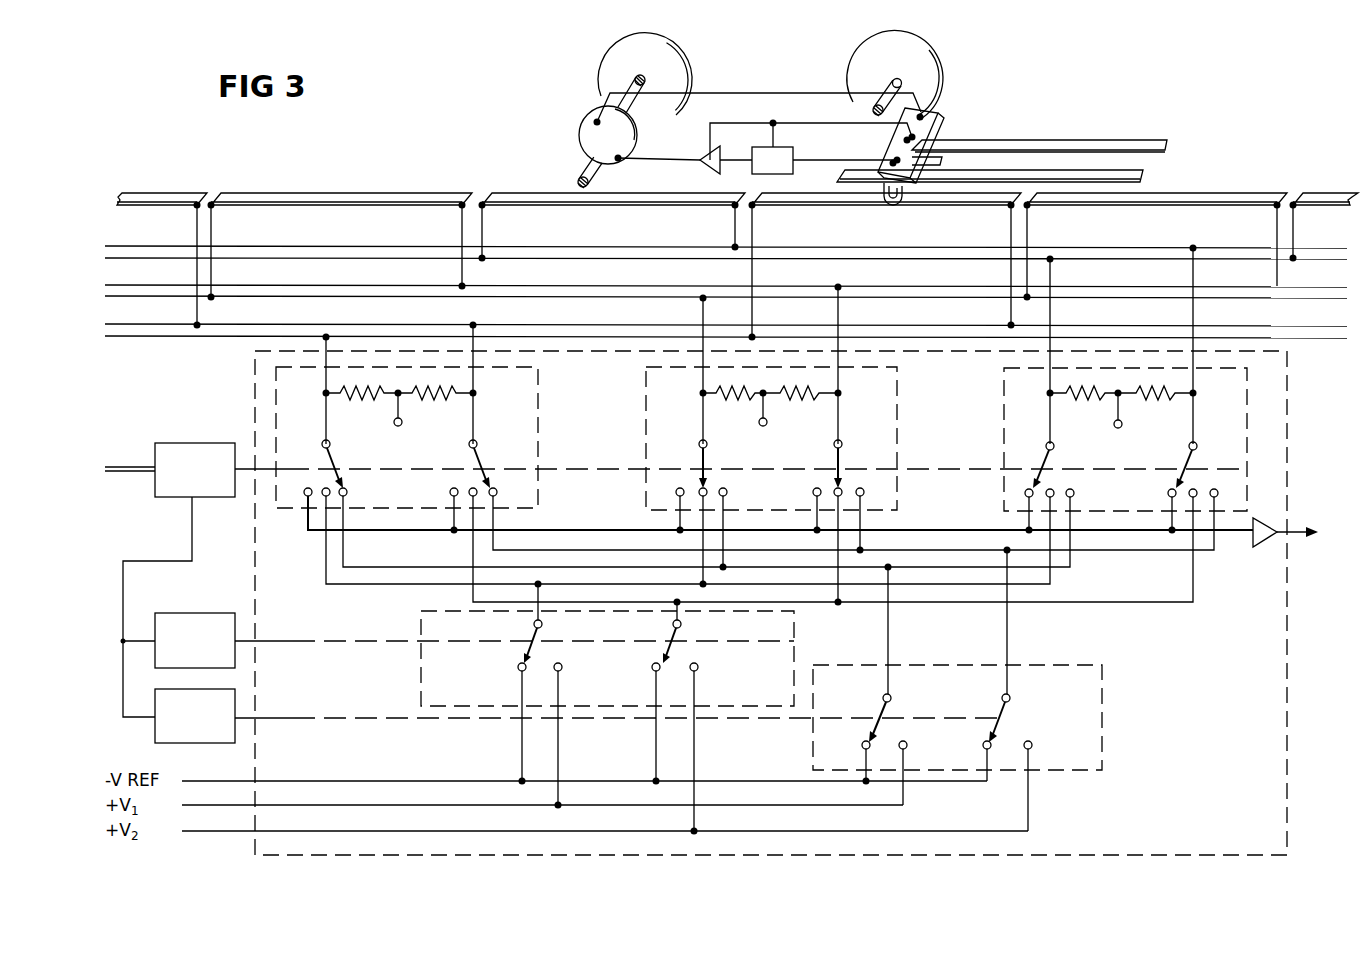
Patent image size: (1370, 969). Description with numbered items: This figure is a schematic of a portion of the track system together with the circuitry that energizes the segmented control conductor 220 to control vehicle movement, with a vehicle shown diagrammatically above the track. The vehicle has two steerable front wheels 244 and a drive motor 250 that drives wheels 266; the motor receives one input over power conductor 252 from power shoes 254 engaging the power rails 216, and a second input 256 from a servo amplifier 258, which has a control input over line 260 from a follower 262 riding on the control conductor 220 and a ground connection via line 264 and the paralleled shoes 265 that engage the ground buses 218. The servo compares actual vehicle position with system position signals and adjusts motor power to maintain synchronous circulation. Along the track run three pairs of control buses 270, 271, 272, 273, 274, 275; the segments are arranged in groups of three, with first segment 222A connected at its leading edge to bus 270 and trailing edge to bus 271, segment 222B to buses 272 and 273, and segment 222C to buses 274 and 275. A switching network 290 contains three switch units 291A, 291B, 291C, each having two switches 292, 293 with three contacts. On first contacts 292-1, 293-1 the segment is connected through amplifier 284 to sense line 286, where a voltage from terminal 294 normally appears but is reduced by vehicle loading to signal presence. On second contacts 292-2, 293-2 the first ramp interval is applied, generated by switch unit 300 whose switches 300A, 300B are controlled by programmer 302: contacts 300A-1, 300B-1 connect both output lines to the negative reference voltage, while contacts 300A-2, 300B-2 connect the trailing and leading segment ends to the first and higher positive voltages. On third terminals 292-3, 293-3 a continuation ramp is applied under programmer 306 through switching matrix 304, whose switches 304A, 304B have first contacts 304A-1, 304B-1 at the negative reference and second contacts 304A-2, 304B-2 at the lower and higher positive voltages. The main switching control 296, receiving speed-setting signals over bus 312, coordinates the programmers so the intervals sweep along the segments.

The power rails 216 is at (1114, 140).
The ground buses 218 is at (1143, 176).
The segmented control conductor 220 is at (1244, 186).
The first segment 222A is at (622, 206).
The segment 222B is at (292, 206).
The segment 222C is at (147, 206).
The steerable front wheels 244 is at (936, 54).
The drive motor 250 is at (584, 121).
The power conductor 252 is at (773, 93).
The power shoes 254 is at (942, 129).
The second input 256 is at (660, 166).
The servo amplifier 258 is at (706, 154).
The line 260 is at (847, 158).
The follower 262 is at (906, 197).
The line 264 is at (822, 124).
The paralleled shoes 265 is at (924, 161).
The wheels 266 is at (598, 63).
The control bus 270 is at (412, 246).
The control bus 271 is at (405, 259).
The control bus 272 is at (313, 285).
The control bus 273 is at (298, 298).
The control bus 274 is at (182, 324).
The control bus 275 is at (172, 338).
The amplifier 284 is at (1282, 522).
The sense line 286 is at (1297, 540).
The switching network 290 is at (252, 409).
The switch unit 291A is at (540, 389).
The switch unit 291B is at (645, 406).
The switch unit 291C is at (1004, 398).
The switch 292 is at (1041, 462).
The first contact 292-1 is at (1024, 494).
The second contact 292-2 is at (1053, 486).
The third terminal 292-3 is at (1073, 495).
The switch 293 is at (1186, 462).
The first contact 293-1 is at (1167, 494).
The second contact 293-2 is at (1196, 486).
The third terminal 293-3 is at (1217, 495).
The terminal 294 is at (1113, 430).
The main switching control 296 is at (161, 443).
The switch unit 300 is at (420, 669).
The switch 300A is at (520, 646).
The first contact 300A-1 is at (516, 671).
The switch contact 300A-2 is at (562, 669).
The switch 300B is at (682, 640).
The first contact 300B-1 is at (653, 671).
The switch contact 300B-2 is at (699, 669).
The programmer 302 is at (180, 651).
The switching matrix 304 is at (1105, 713).
The switch 304A is at (880, 706).
The first contact 304A-1 is at (862, 744).
The second contact 304A-2 is at (906, 745).
The switch 304B is at (1010, 708).
The first contact 304B-1 is at (983, 745).
The second contact 304B-2 is at (1031, 746).
The programmer 306 is at (180, 727).
The bus 312 is at (126, 472).